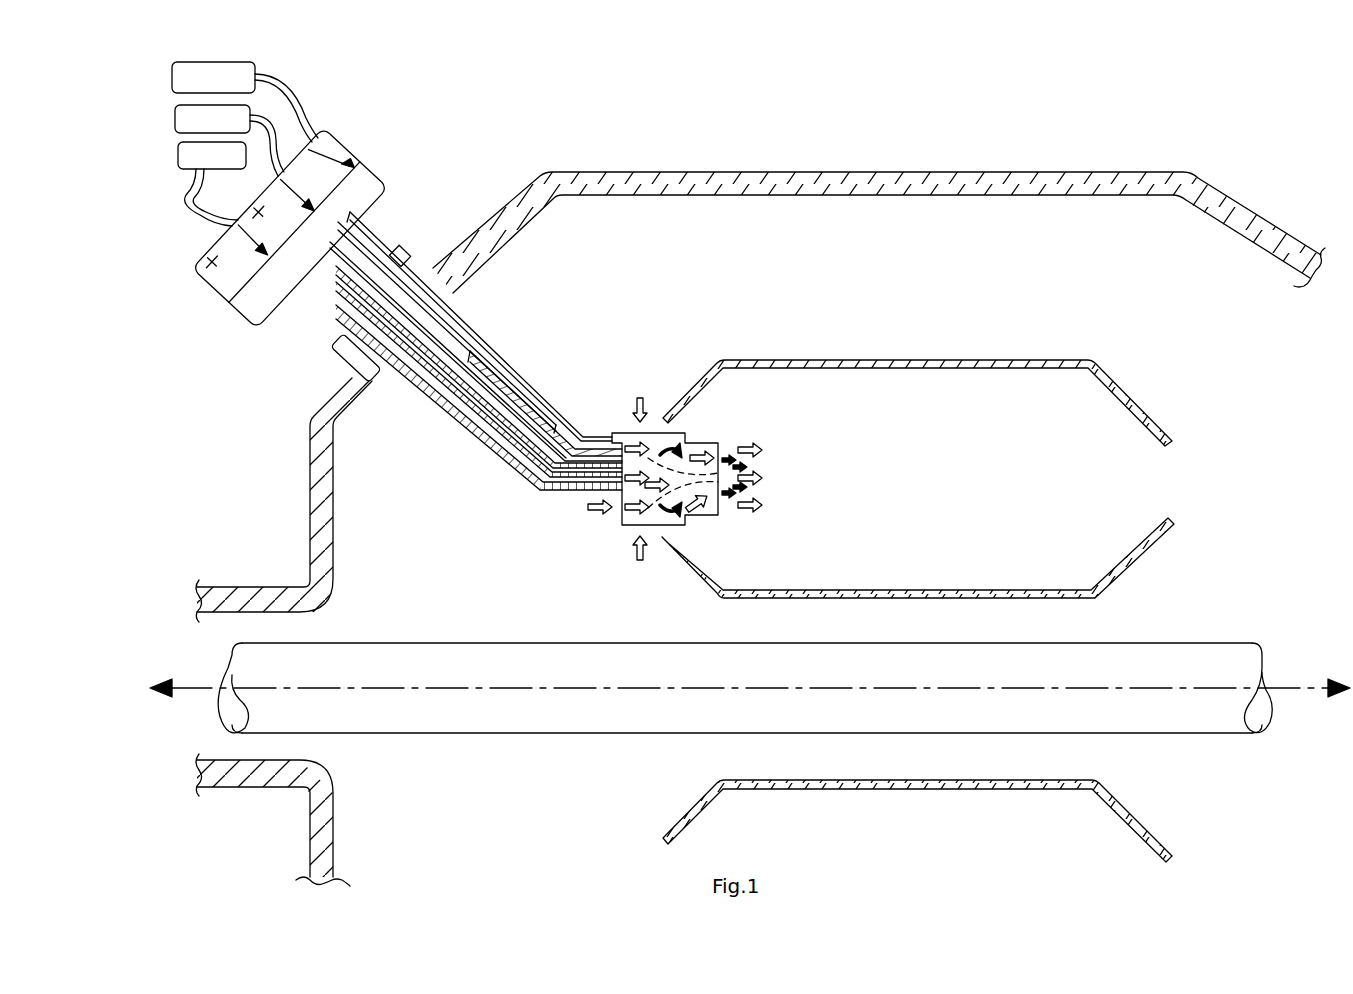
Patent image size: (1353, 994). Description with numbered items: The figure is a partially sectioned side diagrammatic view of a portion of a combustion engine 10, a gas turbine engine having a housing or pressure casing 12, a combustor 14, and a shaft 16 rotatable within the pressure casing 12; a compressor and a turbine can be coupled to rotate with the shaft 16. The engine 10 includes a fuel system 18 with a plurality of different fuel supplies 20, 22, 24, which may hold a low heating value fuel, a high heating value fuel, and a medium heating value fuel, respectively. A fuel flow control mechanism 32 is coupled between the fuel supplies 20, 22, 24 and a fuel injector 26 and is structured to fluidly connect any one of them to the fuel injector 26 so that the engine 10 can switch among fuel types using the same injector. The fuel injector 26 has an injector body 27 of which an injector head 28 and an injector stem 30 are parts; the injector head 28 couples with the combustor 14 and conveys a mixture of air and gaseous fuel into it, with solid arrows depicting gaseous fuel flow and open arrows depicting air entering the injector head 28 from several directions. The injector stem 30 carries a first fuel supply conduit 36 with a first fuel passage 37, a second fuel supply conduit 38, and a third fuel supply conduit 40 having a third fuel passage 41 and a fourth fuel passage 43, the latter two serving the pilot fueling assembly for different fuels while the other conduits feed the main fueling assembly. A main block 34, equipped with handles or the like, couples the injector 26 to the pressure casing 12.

The combustion engine 10 is at (436, 124).
The pressure casing 12 is at (756, 172).
The combustor 14 is at (756, 360).
The shaft 16 is at (410, 734).
The fuel system 18 is at (234, 375).
The fuel supply 20 is at (170, 76).
The fuel supply 22 is at (174, 116).
The fuel supply 24 is at (178, 153).
The fuel injector 26 is at (488, 490).
The injector body 27 is at (547, 492).
The injector head 28 is at (620, 432).
The injector stem 30 is at (476, 351).
The fuel flow control mechanism 32 is at (343, 131).
The main block 34 is at (340, 358).
The first fuel supply conduit 36 is at (510, 364).
The first fuel passage 37 is at (481, 346).
The second fuel supply conduit 38 is at (493, 405).
The third fuel supply conduit 40 is at (411, 398).
The third fuel passage 41 is at (460, 422).
The fourth fuel passage 43 is at (474, 438).